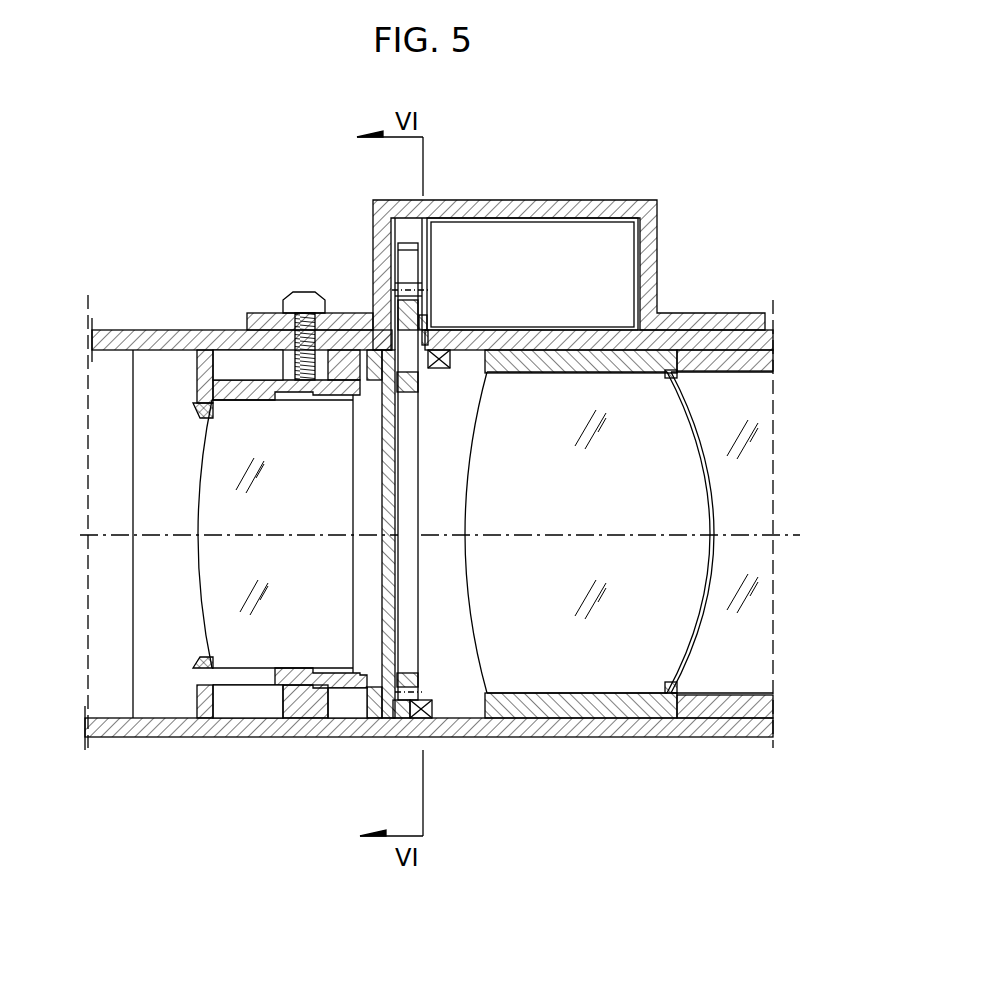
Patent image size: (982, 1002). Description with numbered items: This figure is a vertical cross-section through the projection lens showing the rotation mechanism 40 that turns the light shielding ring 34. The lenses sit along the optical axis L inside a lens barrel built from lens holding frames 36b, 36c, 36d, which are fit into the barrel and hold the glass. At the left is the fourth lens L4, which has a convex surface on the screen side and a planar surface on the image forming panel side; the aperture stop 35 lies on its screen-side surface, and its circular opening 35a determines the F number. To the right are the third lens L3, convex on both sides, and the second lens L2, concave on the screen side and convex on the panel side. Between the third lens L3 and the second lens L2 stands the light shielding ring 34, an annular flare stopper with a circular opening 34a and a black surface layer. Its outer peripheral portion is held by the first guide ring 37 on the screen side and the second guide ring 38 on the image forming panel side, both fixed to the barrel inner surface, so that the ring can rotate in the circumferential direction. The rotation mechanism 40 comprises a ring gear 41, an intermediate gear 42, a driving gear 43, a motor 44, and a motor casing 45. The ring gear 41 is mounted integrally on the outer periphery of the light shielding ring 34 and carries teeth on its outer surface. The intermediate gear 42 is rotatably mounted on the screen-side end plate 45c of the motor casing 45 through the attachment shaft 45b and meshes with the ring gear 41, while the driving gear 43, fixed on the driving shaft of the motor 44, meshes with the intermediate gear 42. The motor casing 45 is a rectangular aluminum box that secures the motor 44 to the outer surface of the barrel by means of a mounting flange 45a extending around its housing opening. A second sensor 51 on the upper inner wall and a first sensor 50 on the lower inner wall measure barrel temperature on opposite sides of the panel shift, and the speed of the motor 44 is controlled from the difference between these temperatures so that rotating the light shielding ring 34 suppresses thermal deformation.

The light shielding ring 34 is at (388, 515).
The circular opening 34a is at (368, 648).
The aperture stop 35 is at (185, 678).
The circular opening 35a is at (200, 659).
The lens holding frame 36b is at (571, 712).
The lens holding frame 36c is at (301, 706).
The lens holding frame 36d is at (160, 330).
The first guide ring 37 is at (366, 718).
The second guide ring 38 is at (408, 722).
The rotation mechanism 40 is at (426, 210).
The ring gear 41 is at (420, 672).
The intermediate gear 42 is at (410, 316).
The driving gear 43 is at (412, 253).
The motor 44 is at (505, 253).
The motor casing 45 is at (655, 206).
The mounting flange 45a is at (312, 328).
The attachment shaft 45b is at (427, 322).
The end plate 45c is at (382, 268).
The first sensor 50 is at (430, 698).
The second sensor 51 is at (442, 372).
The optical axis L is at (265, 530).
The second lens L2 is at (722, 692).
The third lens L3 is at (650, 690).
The fourth lens L4 is at (214, 572).